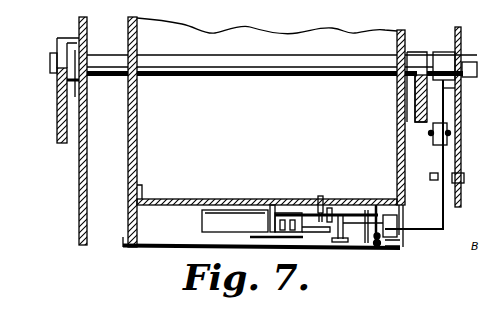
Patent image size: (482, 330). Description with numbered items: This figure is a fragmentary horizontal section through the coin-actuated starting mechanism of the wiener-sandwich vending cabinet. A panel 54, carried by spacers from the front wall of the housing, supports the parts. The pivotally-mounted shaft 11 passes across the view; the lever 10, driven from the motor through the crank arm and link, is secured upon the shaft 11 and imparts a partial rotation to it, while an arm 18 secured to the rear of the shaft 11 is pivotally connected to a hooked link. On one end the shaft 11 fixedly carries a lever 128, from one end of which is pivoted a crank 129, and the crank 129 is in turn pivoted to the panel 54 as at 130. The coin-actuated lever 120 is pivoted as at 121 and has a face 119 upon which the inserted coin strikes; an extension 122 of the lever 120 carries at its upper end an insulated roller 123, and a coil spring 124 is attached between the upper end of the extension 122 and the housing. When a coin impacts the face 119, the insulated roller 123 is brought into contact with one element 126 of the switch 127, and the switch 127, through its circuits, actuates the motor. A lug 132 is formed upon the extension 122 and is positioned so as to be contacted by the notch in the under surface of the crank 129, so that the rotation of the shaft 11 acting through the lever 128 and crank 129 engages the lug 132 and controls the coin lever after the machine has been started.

The lever 10 is at (55, 145).
The shaft 11 is at (242, 63).
The arm 18 is at (413, 53).
The panel 54 is at (79, 191).
The face 119 is at (217, 222).
The lever 120 is at (340, 210).
The pivot 121 is at (178, 198).
The extension 122 is at (375, 210).
The insulated roller 123 is at (342, 243).
The coil spring 124 is at (402, 244).
The switch element 126 is at (300, 227).
The switch 127 is at (278, 238).
The lever 128 is at (448, 57).
The crank 129 is at (446, 224).
The pivot 130 is at (435, 179).
The lug 132 is at (363, 226).